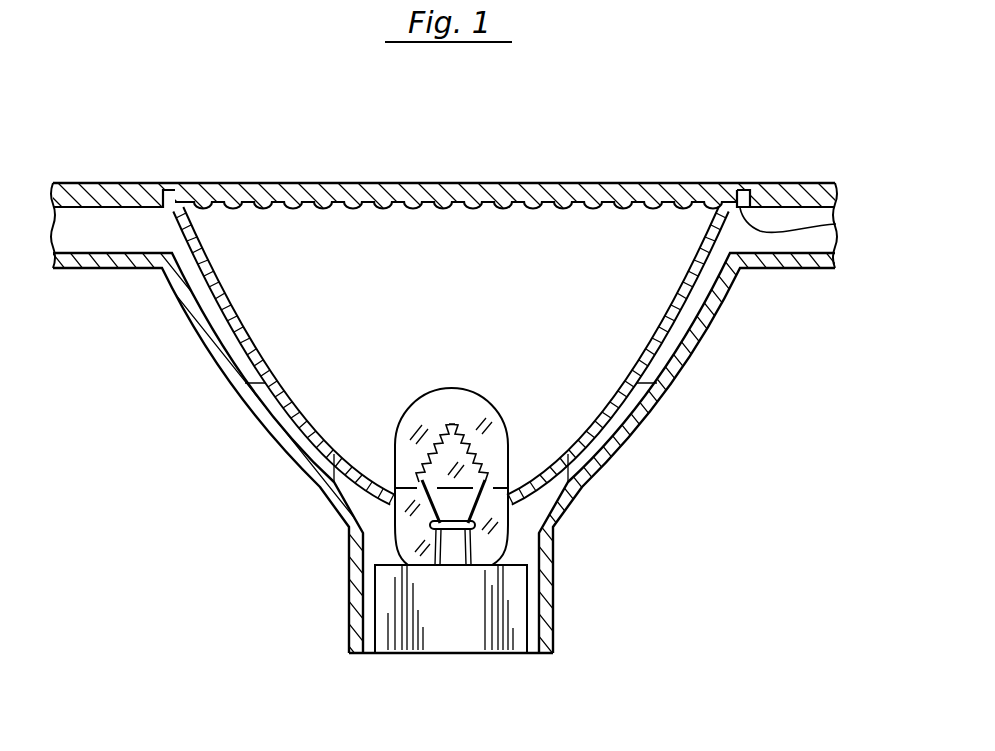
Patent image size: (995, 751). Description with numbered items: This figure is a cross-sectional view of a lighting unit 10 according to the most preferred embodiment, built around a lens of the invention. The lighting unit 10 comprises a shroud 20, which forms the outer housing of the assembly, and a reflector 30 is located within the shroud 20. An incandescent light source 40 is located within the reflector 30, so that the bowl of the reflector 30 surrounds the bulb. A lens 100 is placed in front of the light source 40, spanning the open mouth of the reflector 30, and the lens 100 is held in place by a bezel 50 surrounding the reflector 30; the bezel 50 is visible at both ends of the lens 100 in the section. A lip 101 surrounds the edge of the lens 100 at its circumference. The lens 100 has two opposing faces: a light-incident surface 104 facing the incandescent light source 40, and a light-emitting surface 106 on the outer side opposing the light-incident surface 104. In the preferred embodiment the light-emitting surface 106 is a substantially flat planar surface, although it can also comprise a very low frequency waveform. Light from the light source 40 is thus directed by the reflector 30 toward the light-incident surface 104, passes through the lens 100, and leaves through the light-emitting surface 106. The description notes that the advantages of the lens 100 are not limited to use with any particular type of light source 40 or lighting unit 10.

The lighting unit 10 is at (281, 484).
The shroud 20 is at (222, 368).
The reflector 30 is at (262, 370).
The incandescent light source 40 is at (478, 388).
The bezel 50 is at (108, 183).
The lens 100 is at (510, 183).
The lip 101 is at (836, 224).
The light-incident surface 104 is at (435, 208).
The light-emitting surface 106 is at (668, 183).